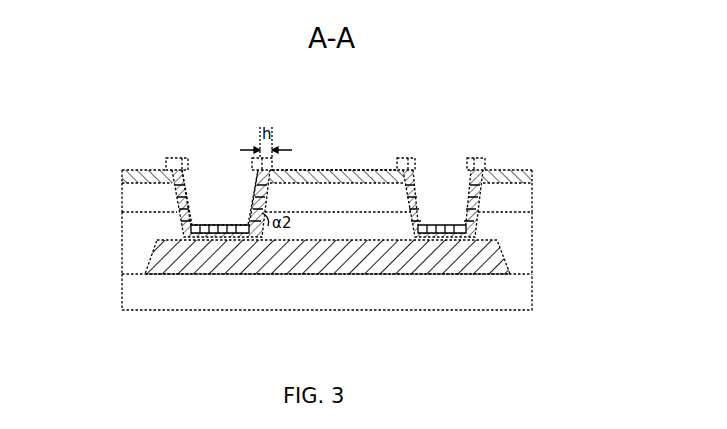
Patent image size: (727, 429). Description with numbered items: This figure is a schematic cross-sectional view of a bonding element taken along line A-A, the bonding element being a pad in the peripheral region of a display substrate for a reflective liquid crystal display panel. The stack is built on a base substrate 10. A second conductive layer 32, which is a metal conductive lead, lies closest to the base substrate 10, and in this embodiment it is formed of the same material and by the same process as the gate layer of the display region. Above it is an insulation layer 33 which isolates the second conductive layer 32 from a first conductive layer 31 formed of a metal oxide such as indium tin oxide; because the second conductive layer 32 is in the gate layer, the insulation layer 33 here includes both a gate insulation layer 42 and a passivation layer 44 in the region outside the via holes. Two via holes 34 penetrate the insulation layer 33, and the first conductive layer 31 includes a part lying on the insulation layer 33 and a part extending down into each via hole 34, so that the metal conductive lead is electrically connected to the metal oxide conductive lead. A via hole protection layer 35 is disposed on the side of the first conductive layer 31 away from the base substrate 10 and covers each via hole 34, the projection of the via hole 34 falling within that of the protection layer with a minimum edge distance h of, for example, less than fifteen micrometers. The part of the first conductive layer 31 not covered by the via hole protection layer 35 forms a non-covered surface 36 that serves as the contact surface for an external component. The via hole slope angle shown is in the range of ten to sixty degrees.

The base substrate 10 is at (515, 290).
The first conductive layer 31 is at (133, 170).
The second conductive layer 32 is at (500, 258).
The insulation layer 33 is at (278, 228).
The via hole 34 is at (213, 178).
The via hole protection layer 35 is at (182, 158).
The non-covered surface 36 is at (328, 170).
The gate insulation layer 42 is at (138, 238).
The passivation layer 44 is at (138, 195).